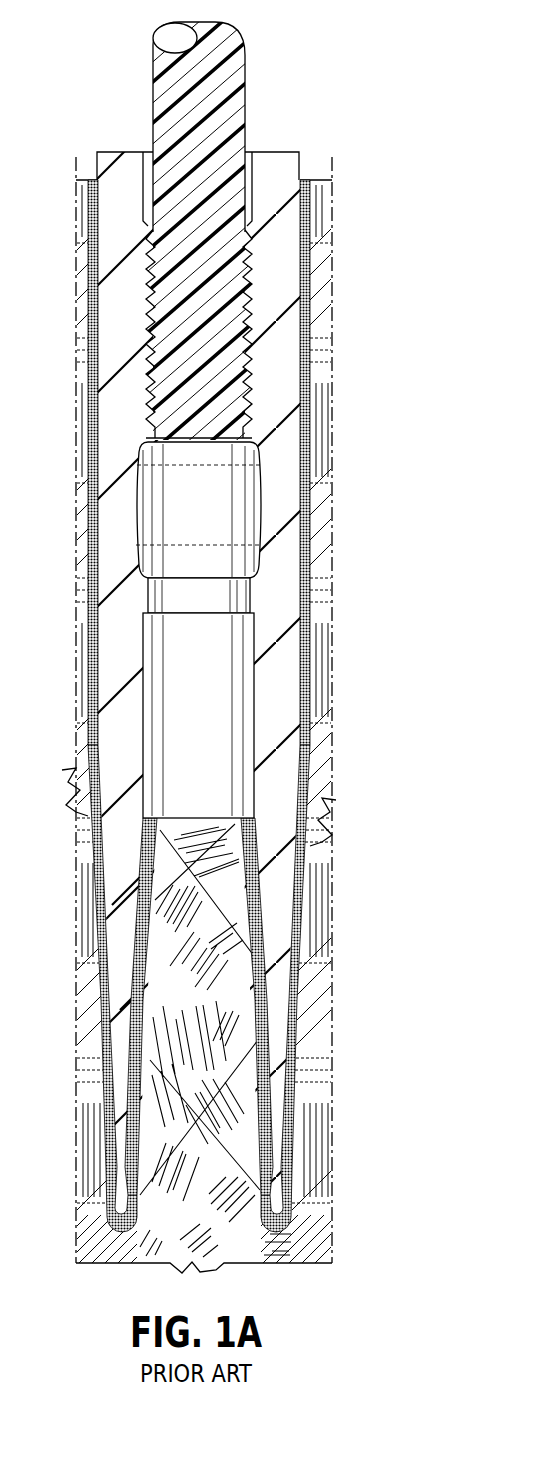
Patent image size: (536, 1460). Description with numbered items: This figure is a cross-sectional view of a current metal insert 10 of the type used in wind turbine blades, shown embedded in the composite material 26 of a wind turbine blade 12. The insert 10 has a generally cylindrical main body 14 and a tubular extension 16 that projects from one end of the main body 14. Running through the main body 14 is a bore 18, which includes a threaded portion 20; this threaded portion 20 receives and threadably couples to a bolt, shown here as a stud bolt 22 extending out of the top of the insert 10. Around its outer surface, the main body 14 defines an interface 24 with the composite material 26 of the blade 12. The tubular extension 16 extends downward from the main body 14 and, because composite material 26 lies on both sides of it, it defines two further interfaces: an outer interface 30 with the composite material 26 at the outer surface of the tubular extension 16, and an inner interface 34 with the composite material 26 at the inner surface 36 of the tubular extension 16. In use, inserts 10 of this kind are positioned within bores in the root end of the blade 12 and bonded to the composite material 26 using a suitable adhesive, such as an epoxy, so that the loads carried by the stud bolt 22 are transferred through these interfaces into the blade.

The metal insert 10 is at (107, 142).
The wind turbine blade 12 is at (322, 1249).
The main body 14 is at (300, 560).
The tubular extension 16 is at (118, 1056).
The bore 18 is at (150, 151).
The threaded portion 20 is at (248, 312).
The stud bolt 22 is at (236, 70).
The interface 24 is at (88, 338).
The composite material 26 is at (316, 1124).
The outer interface 30 is at (100, 950).
The inner interface 34 is at (128, 1172).
The inner surface 36 is at (262, 1043).